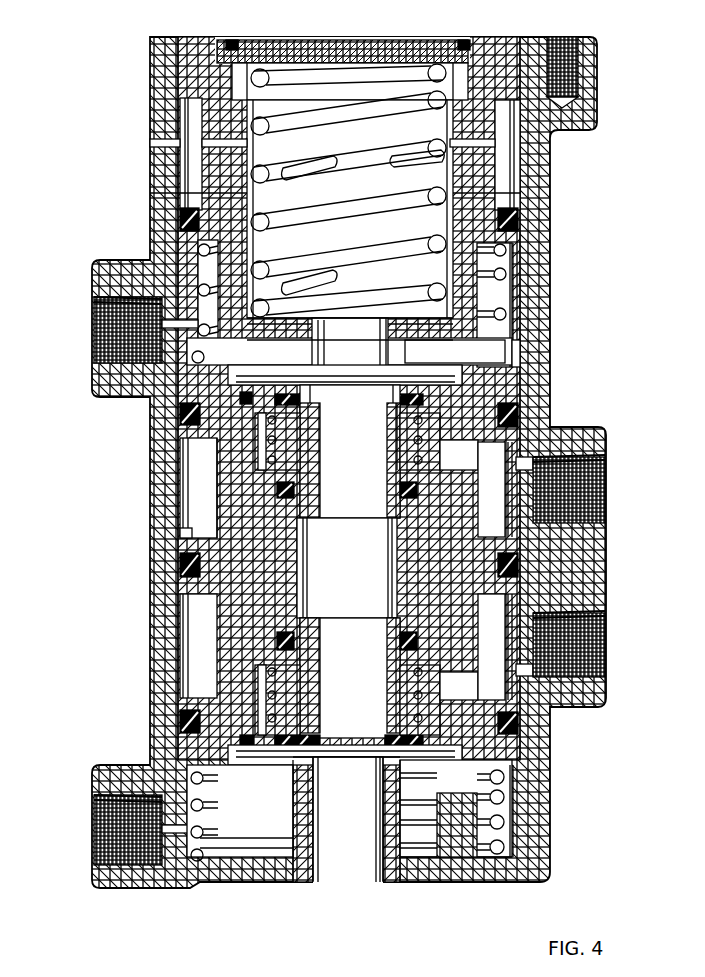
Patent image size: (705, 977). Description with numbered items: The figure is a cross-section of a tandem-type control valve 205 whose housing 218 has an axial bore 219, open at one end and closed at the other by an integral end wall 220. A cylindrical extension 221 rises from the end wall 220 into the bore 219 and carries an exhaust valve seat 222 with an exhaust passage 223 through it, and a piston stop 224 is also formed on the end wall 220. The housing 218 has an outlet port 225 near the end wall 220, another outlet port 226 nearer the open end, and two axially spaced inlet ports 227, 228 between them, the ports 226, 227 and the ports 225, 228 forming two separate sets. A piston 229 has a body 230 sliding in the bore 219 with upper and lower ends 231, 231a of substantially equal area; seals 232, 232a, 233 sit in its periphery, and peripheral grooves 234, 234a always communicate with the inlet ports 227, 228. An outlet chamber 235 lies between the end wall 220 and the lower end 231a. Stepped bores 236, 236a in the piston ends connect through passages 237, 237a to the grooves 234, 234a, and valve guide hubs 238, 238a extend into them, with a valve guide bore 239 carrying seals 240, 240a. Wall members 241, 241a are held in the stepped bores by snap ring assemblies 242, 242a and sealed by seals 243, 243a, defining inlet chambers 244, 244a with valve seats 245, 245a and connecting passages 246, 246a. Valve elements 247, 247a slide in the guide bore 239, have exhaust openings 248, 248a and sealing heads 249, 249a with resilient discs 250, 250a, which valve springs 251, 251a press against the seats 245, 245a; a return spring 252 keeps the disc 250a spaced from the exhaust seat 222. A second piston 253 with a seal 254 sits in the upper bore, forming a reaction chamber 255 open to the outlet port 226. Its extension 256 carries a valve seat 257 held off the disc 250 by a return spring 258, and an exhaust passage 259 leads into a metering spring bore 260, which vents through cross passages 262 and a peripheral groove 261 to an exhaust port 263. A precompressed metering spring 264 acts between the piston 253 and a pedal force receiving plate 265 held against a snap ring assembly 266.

The tandem-type control valve 205 is at (588, 205).
The housing 218 is at (580, 60).
The axial bore 219 is at (515, 148).
The end wall 220 is at (510, 870).
The cylindrical extension 221 is at (308, 820).
The exhaust valve seat 222 is at (303, 762).
The exhaust passage 223 is at (383, 855).
The piston stop 224 is at (505, 812).
The outlet port 225 is at (100, 858).
The outlet port 226 is at (100, 357).
The inlet port 227 is at (598, 520).
The inlet port 228 is at (598, 670).
The piston 229 is at (195, 482).
The piston body 230 is at (228, 505).
The upper end 231 is at (512, 358).
The lower end 231a is at (512, 782).
The seal 232 is at (185, 412).
The seal 232a is at (185, 720).
The seal 233 is at (185, 565).
The upper peripheral groove 234 is at (190, 531).
The lower peripheral groove 234a is at (190, 600).
The outlet chamber 235 is at (455, 866).
The stepped bore 236 is at (516, 445).
The stepped bore 236a is at (505, 680).
The passage 237 is at (492, 450).
The passage 237a is at (485, 668).
The valve guide hub 238 is at (400, 455).
The valve guide hub 238a is at (288, 668).
The valve guide bore 239 is at (395, 563).
The valve receiving seal 240 is at (283, 500).
The valve receiving seal 240a is at (283, 636).
The wall member 241 is at (215, 353).
The wall member 241a is at (400, 768).
The snap ring and groove assembly 242 is at (232, 378).
The snap ring and groove assembly 242a is at (500, 752).
The seal 243 is at (420, 396).
The seal 243a is at (270, 740).
The inlet chamber 244 is at (262, 442).
The inlet chamber 244a is at (262, 690).
The valve seat 245 is at (498, 415).
The valve seat 245a is at (290, 770).
The connecting passage 246 is at (405, 353).
The connecting passage 246a is at (285, 800).
The valve element 247 is at (358, 503).
The valve element 247a is at (352, 643).
The exhaust opening 248 is at (310, 520).
The exhaust opening 248a is at (385, 620).
The sealing head 249 is at (395, 432).
The sealing head 249a is at (388, 712).
The sealing disc 250 is at (312, 396).
The sealing disc 250a is at (308, 738).
The valve spring 251 is at (425, 465).
The valve spring 251a is at (425, 665).
The return spring 252 is at (490, 856).
The piston 253 is at (358, 159).
The seal 254 is at (180, 222).
The reaction chamber 255 is at (512, 262).
The extension 256 is at (312, 335).
The valve seat 257 is at (312, 360).
The return spring 258 is at (500, 272).
The exhaust passage 259 is at (373, 328).
The metering spring bore 260 is at (440, 232).
The peripheral groove 261 is at (185, 110).
The cross passage 262 is at (215, 150).
The exhaust port 263 is at (165, 145).
The metering spring 264 is at (383, 198).
The pedal force receiving plate 265 is at (395, 50).
The snap ring and groove assembly 266 is at (248, 28).